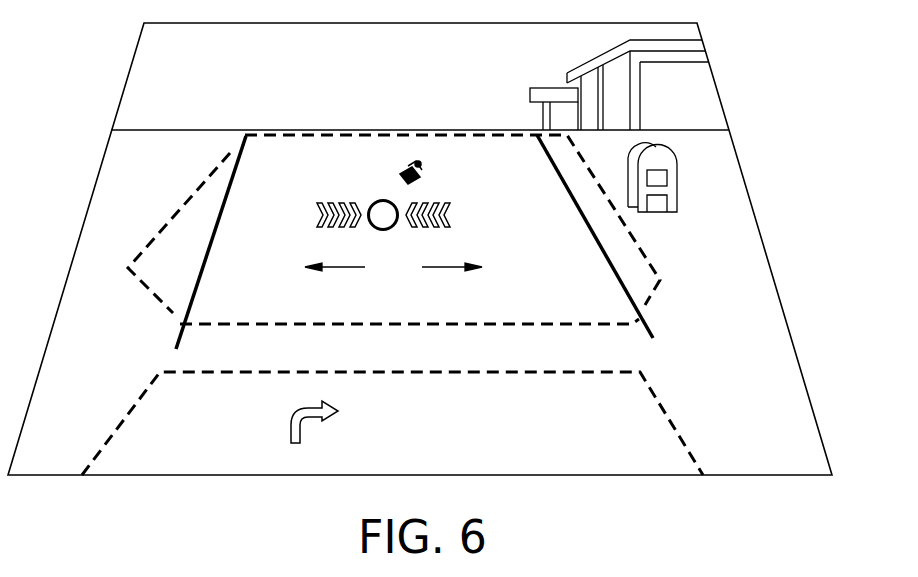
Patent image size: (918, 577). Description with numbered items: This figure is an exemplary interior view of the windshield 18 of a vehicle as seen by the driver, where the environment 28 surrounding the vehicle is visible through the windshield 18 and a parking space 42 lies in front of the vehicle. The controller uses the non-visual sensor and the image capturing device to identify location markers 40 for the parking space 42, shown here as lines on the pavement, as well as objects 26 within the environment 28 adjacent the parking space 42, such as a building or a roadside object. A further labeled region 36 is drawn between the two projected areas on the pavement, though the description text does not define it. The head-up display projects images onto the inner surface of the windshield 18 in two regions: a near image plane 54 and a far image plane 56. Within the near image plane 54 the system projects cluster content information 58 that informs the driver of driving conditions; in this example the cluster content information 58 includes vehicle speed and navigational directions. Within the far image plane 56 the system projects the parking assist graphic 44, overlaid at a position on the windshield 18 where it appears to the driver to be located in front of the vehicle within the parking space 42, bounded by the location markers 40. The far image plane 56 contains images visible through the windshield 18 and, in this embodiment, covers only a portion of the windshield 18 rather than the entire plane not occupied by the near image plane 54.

The windshield 18 is at (135, 52).
The objects 26 is at (660, 158).
The environment 28 is at (165, 177).
The parking zone 36 is at (487, 360).
The location markers 40 is at (226, 197).
The parking space 42 is at (424, 267).
The parking assist graphic 44 is at (378, 199).
The near image plane 54 is at (660, 395).
The far image plane 56 is at (653, 276).
The cluster content information 58 is at (267, 447).